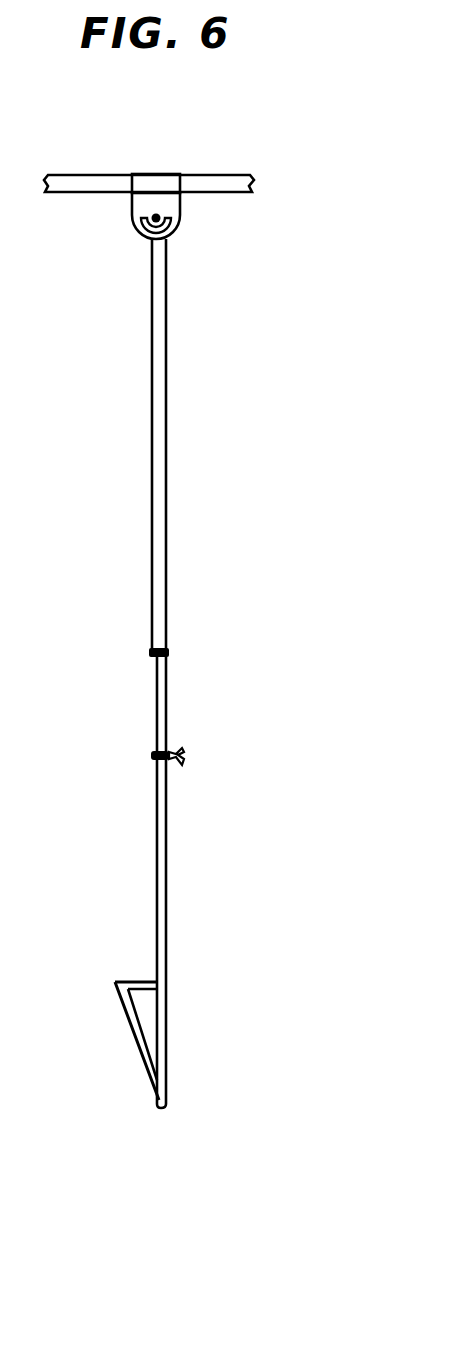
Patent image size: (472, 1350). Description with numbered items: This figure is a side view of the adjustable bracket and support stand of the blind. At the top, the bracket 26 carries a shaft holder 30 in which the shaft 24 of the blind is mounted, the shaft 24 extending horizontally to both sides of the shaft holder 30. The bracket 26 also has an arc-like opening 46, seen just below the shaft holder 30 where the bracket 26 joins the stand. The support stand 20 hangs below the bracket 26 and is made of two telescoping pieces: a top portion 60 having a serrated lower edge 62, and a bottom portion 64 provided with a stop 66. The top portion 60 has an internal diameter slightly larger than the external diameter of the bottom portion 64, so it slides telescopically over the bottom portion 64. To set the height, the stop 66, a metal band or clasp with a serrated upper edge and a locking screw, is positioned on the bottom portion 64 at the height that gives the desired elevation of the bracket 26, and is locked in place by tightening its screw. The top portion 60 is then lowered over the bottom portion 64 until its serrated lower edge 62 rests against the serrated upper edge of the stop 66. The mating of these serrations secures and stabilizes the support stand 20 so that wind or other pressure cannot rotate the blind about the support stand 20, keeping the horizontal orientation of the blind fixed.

The support stand 20 is at (198, 388).
The shaft 24 is at (58, 183).
The bracket 26 is at (194, 252).
The shaft holder 30 is at (163, 180).
The arc-like opening 46 is at (158, 243).
The top portion 60 is at (167, 503).
The serrated lower edge 62 is at (169, 652).
The bottom portion 64 is at (168, 896).
The stop 66 is at (184, 755).